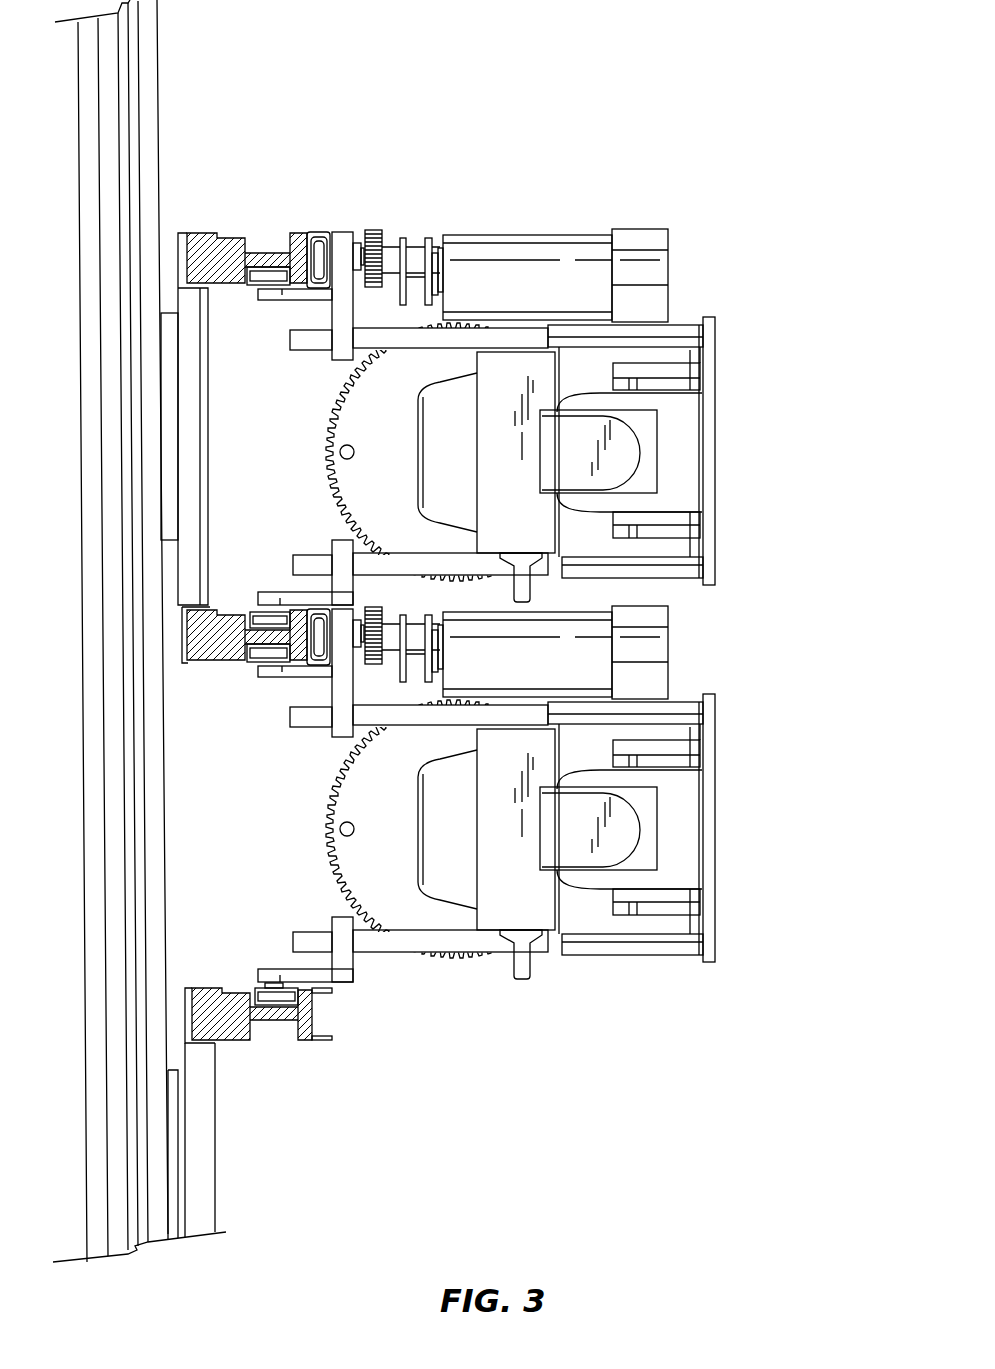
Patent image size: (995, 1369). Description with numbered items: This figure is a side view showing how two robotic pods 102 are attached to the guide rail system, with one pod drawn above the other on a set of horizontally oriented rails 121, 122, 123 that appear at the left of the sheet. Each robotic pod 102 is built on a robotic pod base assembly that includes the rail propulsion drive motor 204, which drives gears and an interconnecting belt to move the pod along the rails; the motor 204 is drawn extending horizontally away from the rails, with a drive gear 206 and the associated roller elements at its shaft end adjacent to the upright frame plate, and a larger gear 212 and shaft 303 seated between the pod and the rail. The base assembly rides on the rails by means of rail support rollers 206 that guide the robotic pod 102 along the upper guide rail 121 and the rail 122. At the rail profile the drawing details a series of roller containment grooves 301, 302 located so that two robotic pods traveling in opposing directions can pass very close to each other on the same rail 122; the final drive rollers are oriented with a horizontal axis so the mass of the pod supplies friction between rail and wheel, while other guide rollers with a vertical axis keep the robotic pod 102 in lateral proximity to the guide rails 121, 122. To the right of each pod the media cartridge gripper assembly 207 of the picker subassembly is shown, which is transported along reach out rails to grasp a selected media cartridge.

The robotic pod 102 is at (742, 443).
The upper guide rail 121 is at (237, 232).
The guide rail 122 is at (207, 665).
The rail 123 is at (220, 1042).
The rail propulsion drive motor 204 is at (568, 235).
The rail support roller 206 is at (329, 226).
The media cartridge gripper assembly 207 is at (675, 388).
The sector gear 212 is at (328, 440).
The roller containment groove 301 is at (314, 226).
The roller containment groove 302 is at (268, 258).
The shaft 303 is at (255, 246).